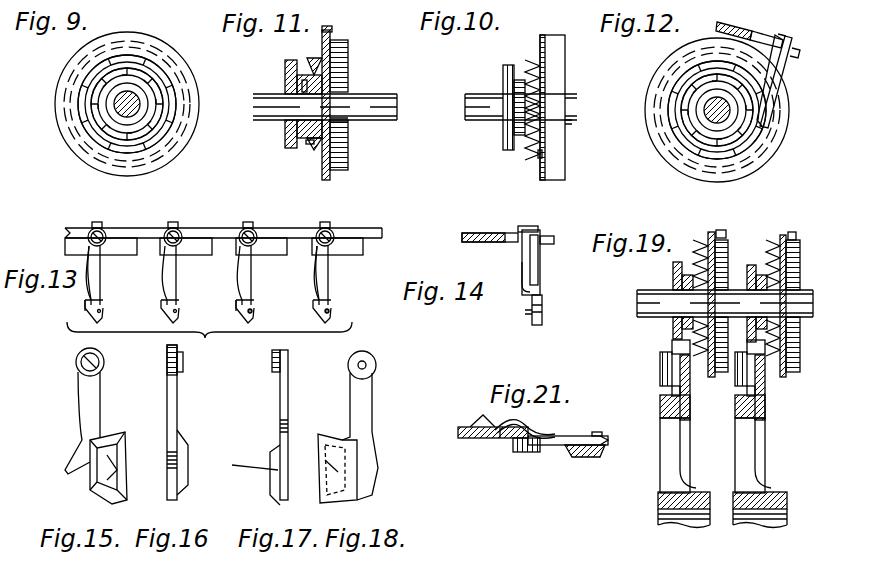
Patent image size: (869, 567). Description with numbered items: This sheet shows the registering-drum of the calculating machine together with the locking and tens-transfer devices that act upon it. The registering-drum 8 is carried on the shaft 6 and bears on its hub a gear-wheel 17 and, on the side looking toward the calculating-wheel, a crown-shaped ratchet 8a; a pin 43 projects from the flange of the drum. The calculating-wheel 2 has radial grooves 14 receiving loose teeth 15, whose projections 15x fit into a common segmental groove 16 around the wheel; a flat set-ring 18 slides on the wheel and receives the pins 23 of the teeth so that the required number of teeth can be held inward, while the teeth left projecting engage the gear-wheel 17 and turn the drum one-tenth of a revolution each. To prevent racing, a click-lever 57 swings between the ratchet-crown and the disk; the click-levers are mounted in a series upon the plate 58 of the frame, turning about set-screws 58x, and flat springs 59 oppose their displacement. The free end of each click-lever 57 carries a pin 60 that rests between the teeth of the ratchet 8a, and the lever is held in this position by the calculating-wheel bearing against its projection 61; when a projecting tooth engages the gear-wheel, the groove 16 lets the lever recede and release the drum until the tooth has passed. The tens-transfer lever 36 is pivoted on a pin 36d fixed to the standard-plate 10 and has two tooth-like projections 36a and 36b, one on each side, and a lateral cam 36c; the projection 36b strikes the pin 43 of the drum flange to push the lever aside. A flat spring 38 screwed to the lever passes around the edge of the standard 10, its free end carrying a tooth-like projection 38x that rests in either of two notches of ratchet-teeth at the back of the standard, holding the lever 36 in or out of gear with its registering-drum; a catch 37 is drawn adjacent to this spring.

In FIG. 19, the calculating-wheel 2 is at (683, 470).
In FIG. 11, the shaft 6 is at (372, 100).
In FIG. 10, the shaft 6 is at (487, 100).
In FIG. 19, the shaft 6 is at (640, 298).
In FIG. 9, the registering-drum 8 is at (172, 143).
In FIG. 11, the registering-drum 8 is at (345, 155).
In FIG. 10, the registering-drum 8 is at (556, 146).
In FIG. 12, the registering-drum 8 is at (752, 165).
In FIG. 19, the registering-drum 8 is at (718, 272).
In FIG. 9, the crown-shaped ratchet 8a is at (108, 138).
In FIG. 11, the crown-shaped ratchet 8a is at (312, 146).
In FIG. 10, the crown-shaped ratchet 8a is at (540, 158).
In FIG. 12, the crown-shaped ratchet 8a is at (697, 150).
In FIG. 19, the crown-shaped ratchet 8a is at (700, 258).
In FIG. 21, the standard-plate 10 is at (480, 440).
In FIG. 19, the radial groove 14 is at (668, 420).
In FIG. 19, the loose tooth 15 is at (660, 370).
In FIG. 19, the projection of loose tooth 15x is at (672, 348).
In FIG. 19, the segmental groove 16 is at (680, 384).
In FIG. 9, the gear-wheel 17 is at (150, 78).
In FIG. 11, the gear-wheel 17 is at (284, 76).
In FIG. 10, the gear-wheel 17 is at (503, 135).
In FIG. 12, the gear-wheel 17 is at (685, 118).
In FIG. 19, the gear-wheel 17 is at (672, 337).
In FIG. 19, the set-ring 18 is at (750, 410).
In FIG. 19, the pin of loose tooth 23 is at (672, 384).
In FIG. 15, the transfer-lever 36 is at (95, 410).
In FIG. 16, the transfer-lever 36 is at (178, 408).
In FIG. 17, the transfer-lever 36 is at (288, 392).
In FIG. 18, the transfer-lever 36 is at (372, 392).
In FIG. 21, the transfer-lever 36 is at (555, 446).
In FIG. 15, the tooth-like projection 36a is at (114, 460).
In FIG. 18, the tooth-like projection 36a is at (378, 468).
In FIG. 21, the tooth-like projection 36a is at (604, 440).
In FIG. 15, the tooth-like projection 36b is at (112, 470).
In FIG. 18, the tooth-like projection 36b is at (330, 465).
In FIG. 15, the lateral cam 36c is at (125, 447).
In FIG. 16, the lateral cam 36c is at (180, 477).
In FIG. 17, the lateral cam 36c is at (283, 478).
In FIG. 18, the lateral cam 36c is at (320, 480).
In FIG. 21, the lateral cam 36c is at (585, 458).
In FIG. 21, the pin 36d is at (525, 452).
In FIG. 21, the catch 37 is at (480, 420).
In FIG. 21, the flat spring 38 is at (540, 428).
In FIG. 21, the tooth-like projection of spring 38x is at (500, 440).
In FIG. 11, the pin 43 is at (348, 130).
In FIG. 10, the pin 43 is at (572, 130).
In FIG. 12, the click-lever 57 is at (778, 70).
In FIG. 13, the click-lever 57 is at (100, 285).
In FIG. 14, the click-lever 57 is at (541, 260).
In FIG. 12, the plate 58 is at (748, 28).
In FIG. 14, the plate 58 is at (488, 226).
In FIG. 13, the set-screw 58x is at (178, 222).
In FIG. 14, the set-screw 58x is at (554, 240).
In FIG. 12, the flat spring 59 is at (778, 80).
In FIG. 13, the flat spring 59 is at (83, 258).
In FIG. 14, the flat spring 59 is at (522, 258).
In FIG. 13, the pin 60 is at (252, 311).
In FIG. 14, the pin 60 is at (525, 312).
In FIG. 13, the projection 61 is at (85, 312).
In FIG. 14, the projection 61 is at (542, 312).